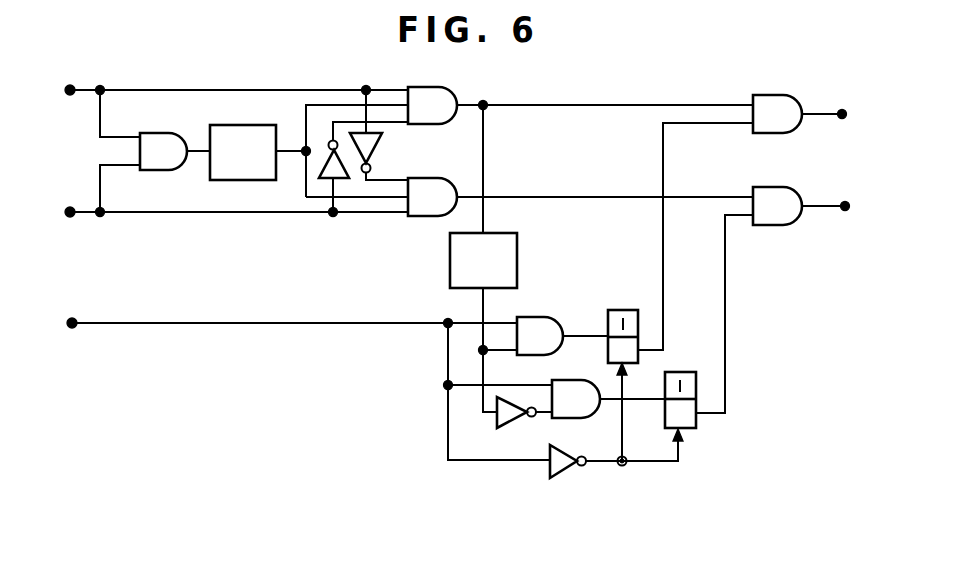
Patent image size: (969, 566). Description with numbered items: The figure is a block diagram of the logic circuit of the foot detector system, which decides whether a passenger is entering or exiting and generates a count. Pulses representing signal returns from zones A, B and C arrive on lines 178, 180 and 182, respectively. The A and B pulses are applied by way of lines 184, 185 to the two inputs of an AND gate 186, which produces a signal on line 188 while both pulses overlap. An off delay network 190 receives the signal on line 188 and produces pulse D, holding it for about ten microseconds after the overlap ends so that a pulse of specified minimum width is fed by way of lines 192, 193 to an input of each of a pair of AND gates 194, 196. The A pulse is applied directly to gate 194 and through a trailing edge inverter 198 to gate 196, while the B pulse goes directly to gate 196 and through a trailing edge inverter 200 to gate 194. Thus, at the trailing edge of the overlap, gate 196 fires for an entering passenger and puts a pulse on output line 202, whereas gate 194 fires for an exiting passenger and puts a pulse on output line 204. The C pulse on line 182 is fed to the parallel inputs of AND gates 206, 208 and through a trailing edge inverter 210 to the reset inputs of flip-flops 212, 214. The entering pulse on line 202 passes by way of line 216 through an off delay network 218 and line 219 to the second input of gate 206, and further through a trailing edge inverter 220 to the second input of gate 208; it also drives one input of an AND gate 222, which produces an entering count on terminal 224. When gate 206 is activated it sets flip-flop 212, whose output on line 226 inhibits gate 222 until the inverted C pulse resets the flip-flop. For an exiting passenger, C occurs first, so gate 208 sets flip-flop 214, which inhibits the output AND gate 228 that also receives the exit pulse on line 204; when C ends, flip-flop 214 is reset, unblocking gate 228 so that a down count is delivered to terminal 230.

The line 178 is at (80, 213).
The line 180 is at (76, 90).
The line 182 is at (133, 322).
The line 184 is at (100, 174).
The line 185 is at (100, 113).
The AND gate 186 is at (140, 149).
The line 188 is at (197, 155).
The off delay network 190 is at (250, 125).
The line 192 is at (305, 163).
The line 193 is at (305, 117).
The AND gate 194 is at (432, 211).
The AND gate 196 is at (437, 86).
The trailing edge inverter 198 is at (331, 168).
The trailing edge inverter 200 is at (370, 141).
The output line 202 is at (465, 100).
The output line 204 is at (507, 197).
The AND gate 206 is at (542, 320).
The AND gate 208 is at (578, 410).
The trailing edge inverter 210 is at (563, 469).
The flip-flop 212 is at (607, 343).
The flip-flop 214 is at (696, 388).
The line 216 is at (483, 150).
The off delay network 218 is at (517, 235).
The line 219 is at (482, 306).
The trailing edge inverter 220 is at (513, 410).
The AND gate 222 is at (780, 103).
The terminal 224 is at (841, 116).
The line 226 is at (663, 270).
The output AND gate 228 is at (782, 210).
The terminal 230 is at (845, 209).